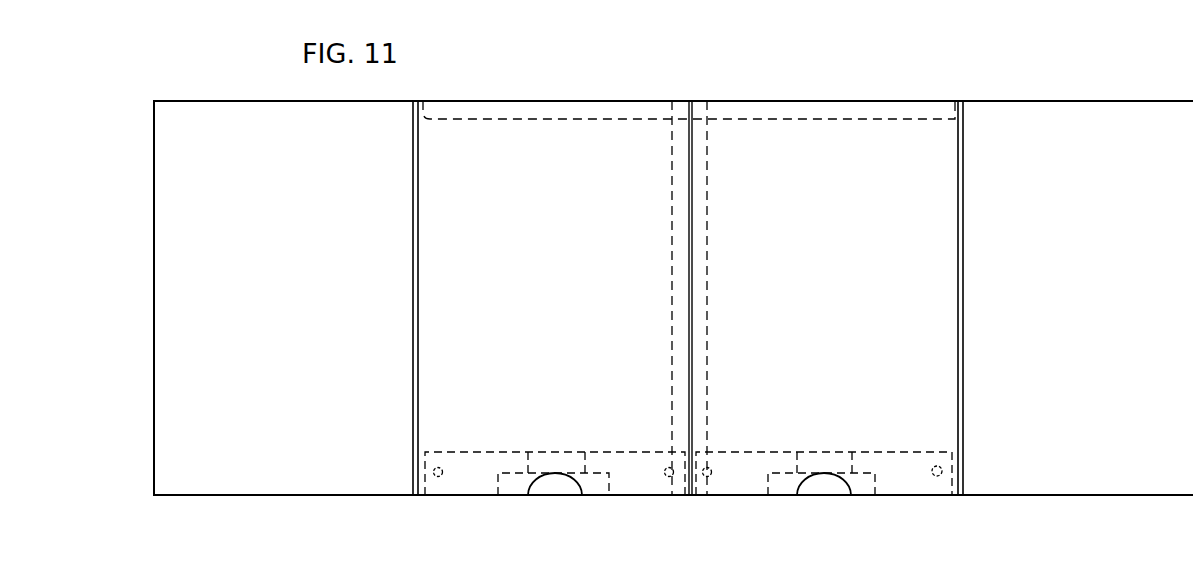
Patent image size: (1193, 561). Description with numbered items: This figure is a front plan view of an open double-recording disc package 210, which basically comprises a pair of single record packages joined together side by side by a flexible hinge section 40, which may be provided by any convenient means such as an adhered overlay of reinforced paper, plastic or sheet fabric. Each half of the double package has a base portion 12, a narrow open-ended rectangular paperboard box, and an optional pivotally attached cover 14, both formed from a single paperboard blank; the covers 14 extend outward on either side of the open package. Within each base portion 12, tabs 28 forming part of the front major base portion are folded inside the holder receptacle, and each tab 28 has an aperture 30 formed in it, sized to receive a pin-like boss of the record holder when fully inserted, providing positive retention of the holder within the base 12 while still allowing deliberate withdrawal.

The double-record package 210 is at (872, 82).
The cover 14 is at (213, 114).
The base portion 12 is at (551, 133).
The flexible hinge section 40 is at (700, 304).
The tab 28 is at (466, 488).
The aperture 30 is at (937, 478).